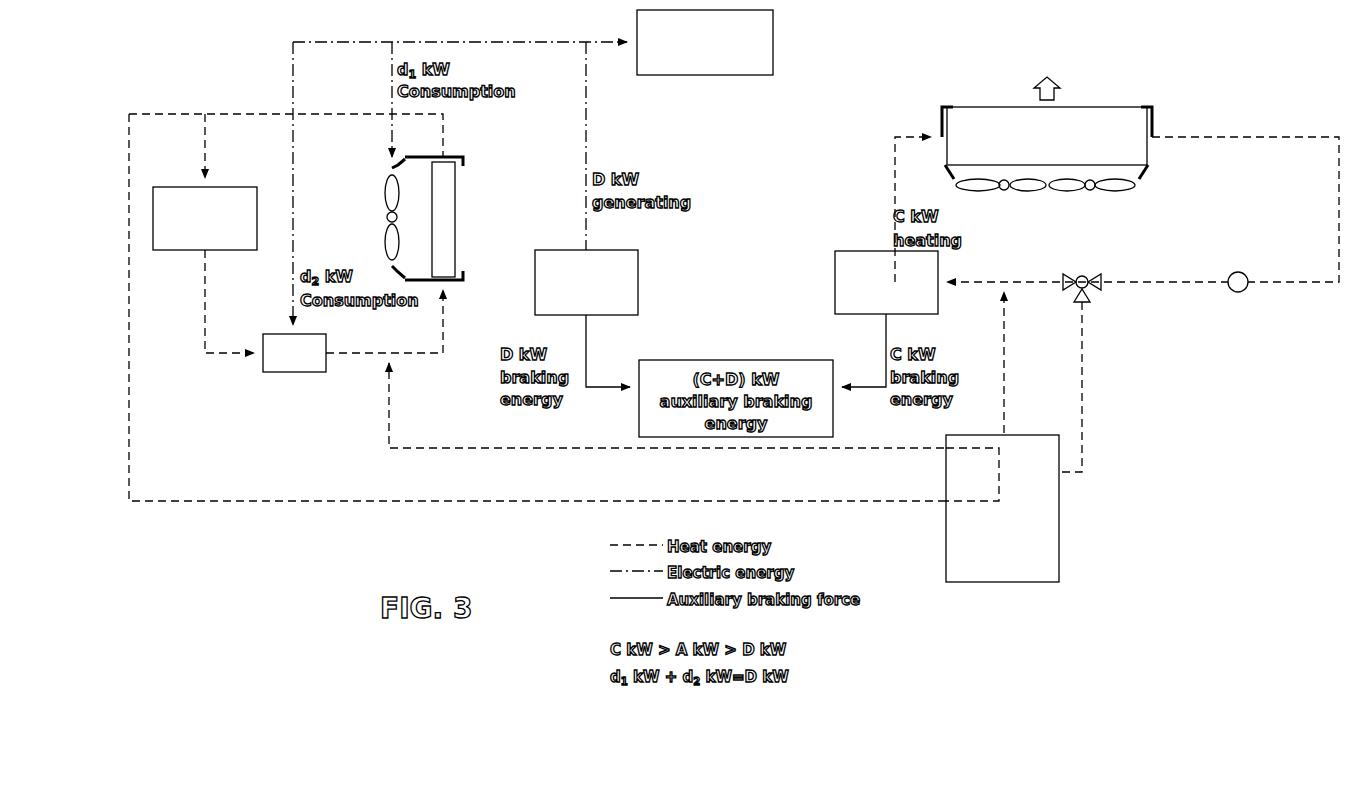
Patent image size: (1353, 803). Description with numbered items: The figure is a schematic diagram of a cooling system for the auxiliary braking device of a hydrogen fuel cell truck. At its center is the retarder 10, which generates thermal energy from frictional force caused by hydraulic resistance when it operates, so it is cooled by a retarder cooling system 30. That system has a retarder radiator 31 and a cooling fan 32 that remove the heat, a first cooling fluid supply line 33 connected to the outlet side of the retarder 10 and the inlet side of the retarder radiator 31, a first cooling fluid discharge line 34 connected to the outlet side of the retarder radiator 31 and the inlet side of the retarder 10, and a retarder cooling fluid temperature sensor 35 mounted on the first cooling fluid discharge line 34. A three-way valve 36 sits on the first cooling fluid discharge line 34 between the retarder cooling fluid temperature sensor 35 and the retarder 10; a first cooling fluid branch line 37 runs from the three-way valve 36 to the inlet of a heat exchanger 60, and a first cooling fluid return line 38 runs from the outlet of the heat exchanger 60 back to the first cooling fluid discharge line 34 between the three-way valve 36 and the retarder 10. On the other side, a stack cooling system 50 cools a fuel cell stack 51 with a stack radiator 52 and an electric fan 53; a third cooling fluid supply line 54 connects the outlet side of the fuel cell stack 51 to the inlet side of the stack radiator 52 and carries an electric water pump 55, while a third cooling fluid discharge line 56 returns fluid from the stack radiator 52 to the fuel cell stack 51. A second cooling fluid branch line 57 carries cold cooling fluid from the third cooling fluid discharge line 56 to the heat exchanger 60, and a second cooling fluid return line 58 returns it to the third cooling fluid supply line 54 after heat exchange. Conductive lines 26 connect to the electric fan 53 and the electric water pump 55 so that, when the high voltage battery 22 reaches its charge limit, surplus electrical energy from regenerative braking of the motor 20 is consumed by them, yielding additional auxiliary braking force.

The retarder 10 is at (848, 251).
The motor 20 is at (638, 282).
The high voltage battery 22 is at (688, 75).
The conductive lines 26 is at (392, 130).
The retarder cooling system 30 is at (1085, 264).
The retarder radiator 31 is at (1140, 107).
The cooling fan 32 is at (1066, 191).
The first cooling fluid supply line 33 is at (895, 165).
The first cooling fluid discharge line 34 is at (1177, 286).
The retarder cooling fluid temperature sensor 35 is at (1238, 293).
The three-way valve 36 is at (1095, 295).
The first cooling fluid branch line 37 is at (1083, 410).
The first cooling fluid return line 38 is at (1004, 372).
The stack cooling system 50 is at (464, 142).
The fuel cell stack 51 is at (232, 187).
The stack radiator 52 is at (460, 190).
The electric fan 53 is at (390, 245).
The third cooling fluid supply line 54 is at (237, 355).
The electric water pump 55 is at (300, 372).
The third cooling fluid discharge line 56 is at (244, 113).
The second cooling fluid branch line 57 is at (129, 390).
The second cooling fluid return line 58 is at (450, 448).
The heat exchanger 60 is at (1060, 506).